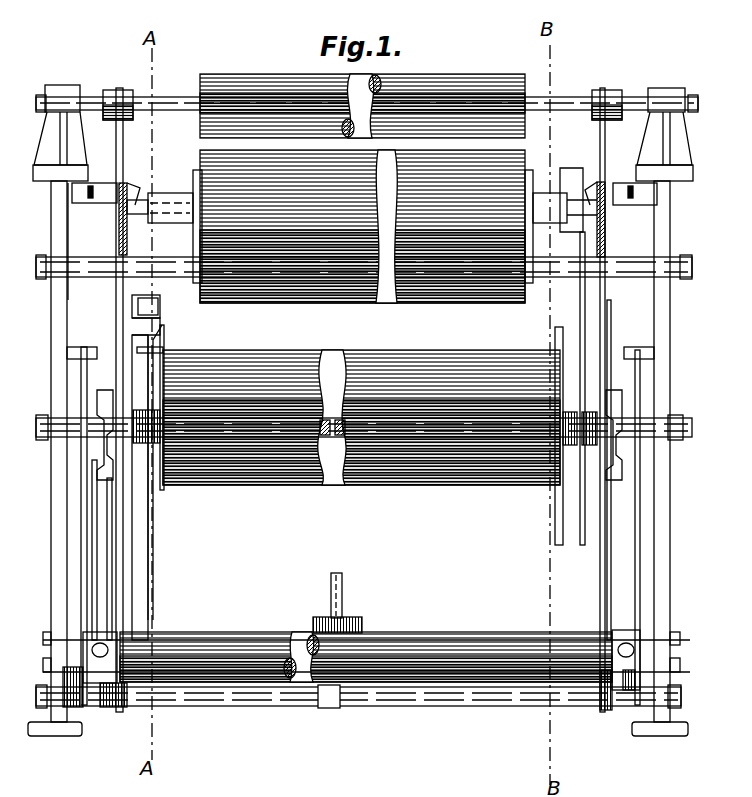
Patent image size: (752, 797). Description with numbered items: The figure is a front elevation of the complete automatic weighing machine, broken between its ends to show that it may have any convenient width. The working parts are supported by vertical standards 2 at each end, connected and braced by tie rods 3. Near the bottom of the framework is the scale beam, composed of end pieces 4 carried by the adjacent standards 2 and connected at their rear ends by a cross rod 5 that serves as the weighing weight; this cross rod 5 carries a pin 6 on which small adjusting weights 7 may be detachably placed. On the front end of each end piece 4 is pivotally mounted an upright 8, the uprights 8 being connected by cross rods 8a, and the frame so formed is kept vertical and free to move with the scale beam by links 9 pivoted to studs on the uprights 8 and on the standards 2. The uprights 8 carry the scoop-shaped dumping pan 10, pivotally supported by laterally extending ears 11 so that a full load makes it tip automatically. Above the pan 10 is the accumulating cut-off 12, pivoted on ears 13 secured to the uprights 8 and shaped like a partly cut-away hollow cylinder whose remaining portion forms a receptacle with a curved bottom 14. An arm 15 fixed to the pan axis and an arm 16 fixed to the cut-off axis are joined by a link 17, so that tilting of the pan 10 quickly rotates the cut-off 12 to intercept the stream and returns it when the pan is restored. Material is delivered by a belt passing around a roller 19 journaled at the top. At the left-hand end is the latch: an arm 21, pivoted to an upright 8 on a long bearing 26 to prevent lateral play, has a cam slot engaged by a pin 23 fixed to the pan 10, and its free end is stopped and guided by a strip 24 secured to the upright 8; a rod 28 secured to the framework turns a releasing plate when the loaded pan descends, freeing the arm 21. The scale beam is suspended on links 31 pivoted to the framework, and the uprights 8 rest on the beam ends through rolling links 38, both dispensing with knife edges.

The vertical standard 2 is at (51, 312).
The tie rod 3 is at (624, 100).
The scale beam end piece 4 is at (93, 700).
The cross rod 5 is at (420, 640).
The pin 6 is at (342, 592).
The adjusting weight 7 is at (362, 622).
The upright 8 is at (116, 294).
The cross rod 8a is at (570, 98).
The link 9 is at (92, 204).
The dumping pan 10 is at (483, 475).
The ear 11 is at (110, 398).
The cut-off 12 is at (218, 178).
The ear 13 is at (124, 183).
The curved bottom 14 is at (359, 226).
The arm 15 is at (556, 504).
The arm 16 is at (560, 186).
The link 17 is at (580, 308).
The roller 19 is at (380, 76).
The arm 21 is at (148, 509).
The pin 23 is at (163, 358).
The strip 24 is at (153, 581).
The long bearing 26 is at (160, 315).
The rod 28 is at (92, 538).
The link 31 is at (81, 456).
The link 38 is at (107, 565).